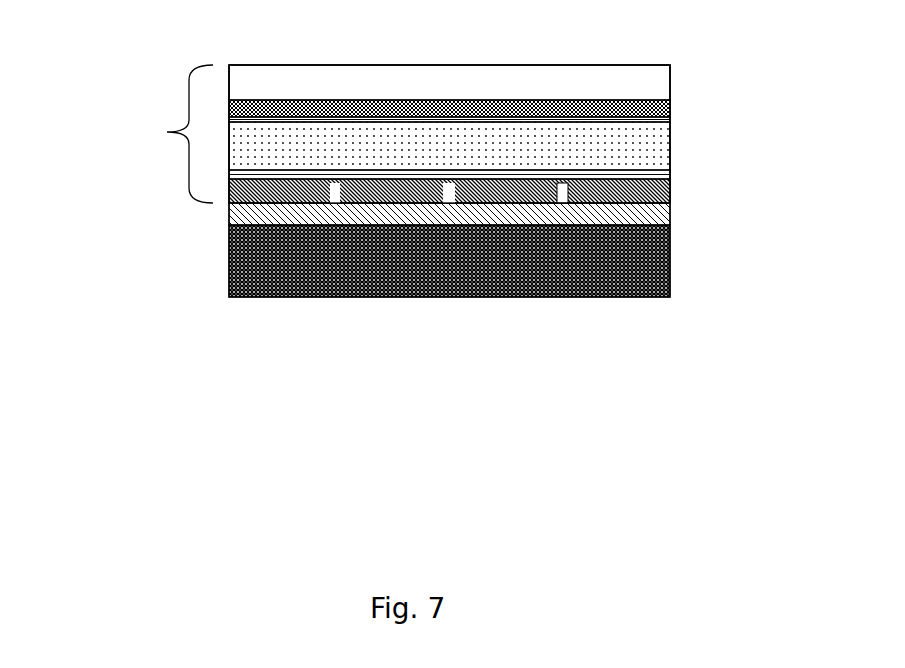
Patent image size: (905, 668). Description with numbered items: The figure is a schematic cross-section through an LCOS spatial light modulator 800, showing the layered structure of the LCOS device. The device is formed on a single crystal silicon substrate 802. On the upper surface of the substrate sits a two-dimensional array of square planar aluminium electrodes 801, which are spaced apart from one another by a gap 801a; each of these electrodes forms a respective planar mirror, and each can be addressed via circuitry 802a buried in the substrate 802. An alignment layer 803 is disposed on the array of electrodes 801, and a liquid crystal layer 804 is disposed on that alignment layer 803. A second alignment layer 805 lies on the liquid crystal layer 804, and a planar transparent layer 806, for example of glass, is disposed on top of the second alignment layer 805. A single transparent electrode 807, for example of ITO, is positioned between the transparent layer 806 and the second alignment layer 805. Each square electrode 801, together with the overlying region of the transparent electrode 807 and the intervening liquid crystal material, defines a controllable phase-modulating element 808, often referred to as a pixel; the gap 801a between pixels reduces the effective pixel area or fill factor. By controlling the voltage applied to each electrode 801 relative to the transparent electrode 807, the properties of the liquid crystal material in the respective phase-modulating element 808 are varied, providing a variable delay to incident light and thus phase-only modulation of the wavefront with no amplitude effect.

The semiconductor device 800 is at (728, 437).
The square planar aluminium electrodes 801 is at (670, 191).
The gap 801a is at (562, 193).
The single crystal silicon substrate 802 is at (227, 272).
The circuitry 802a is at (227, 218).
The alignment layer 803 is at (670, 173).
The liquid crystal layer 804 is at (675, 138).
The second alignment layer 805 is at (670, 118).
The planar transparent layer 806 is at (675, 77).
The transparent electrode 807 is at (675, 105).
The controllable phase-modulating element 808 is at (165, 148).